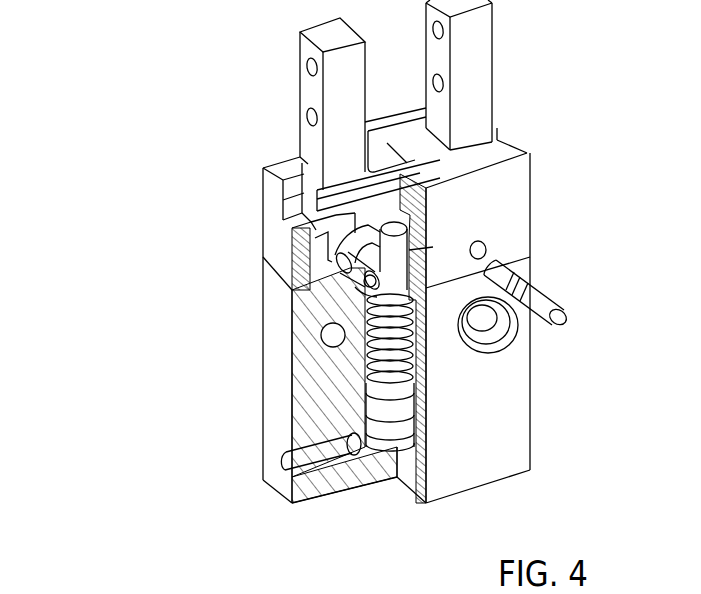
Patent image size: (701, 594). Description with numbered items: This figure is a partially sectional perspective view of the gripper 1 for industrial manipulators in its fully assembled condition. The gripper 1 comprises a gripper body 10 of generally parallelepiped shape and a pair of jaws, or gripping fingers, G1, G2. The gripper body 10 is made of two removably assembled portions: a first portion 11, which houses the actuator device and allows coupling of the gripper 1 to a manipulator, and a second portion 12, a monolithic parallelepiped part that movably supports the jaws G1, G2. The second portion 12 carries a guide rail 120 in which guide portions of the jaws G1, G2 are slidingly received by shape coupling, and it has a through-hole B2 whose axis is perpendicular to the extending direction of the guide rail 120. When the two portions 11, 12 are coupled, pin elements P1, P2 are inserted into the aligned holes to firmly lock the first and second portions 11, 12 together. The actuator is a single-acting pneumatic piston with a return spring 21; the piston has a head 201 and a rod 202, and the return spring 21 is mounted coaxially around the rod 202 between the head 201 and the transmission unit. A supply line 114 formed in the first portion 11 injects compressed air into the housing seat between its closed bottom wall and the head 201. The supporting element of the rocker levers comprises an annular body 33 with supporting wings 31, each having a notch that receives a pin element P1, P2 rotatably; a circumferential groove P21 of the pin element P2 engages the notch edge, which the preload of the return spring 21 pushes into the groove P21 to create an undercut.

The gripper 1 is at (145, 285).
The gripper body 10 is at (465, 432).
The first portion 11 is at (533, 437).
The second portion 12 is at (534, 202).
The supply line 114 is at (283, 457).
The guide rail 120 is at (285, 210).
The head 201 is at (367, 398).
The rod 202 is at (352, 352).
The return spring 21 is at (292, 318).
The supporting wing 31 is at (292, 265).
The annular body 33 is at (433, 247).
The through-hole B2 is at (486, 248).
The pin element P1 is at (285, 302).
The pin element P2 is at (565, 325).
The circumferential groove P21 is at (538, 284).
The jaw G1 is at (298, 92).
The jaw G2 is at (493, 58).